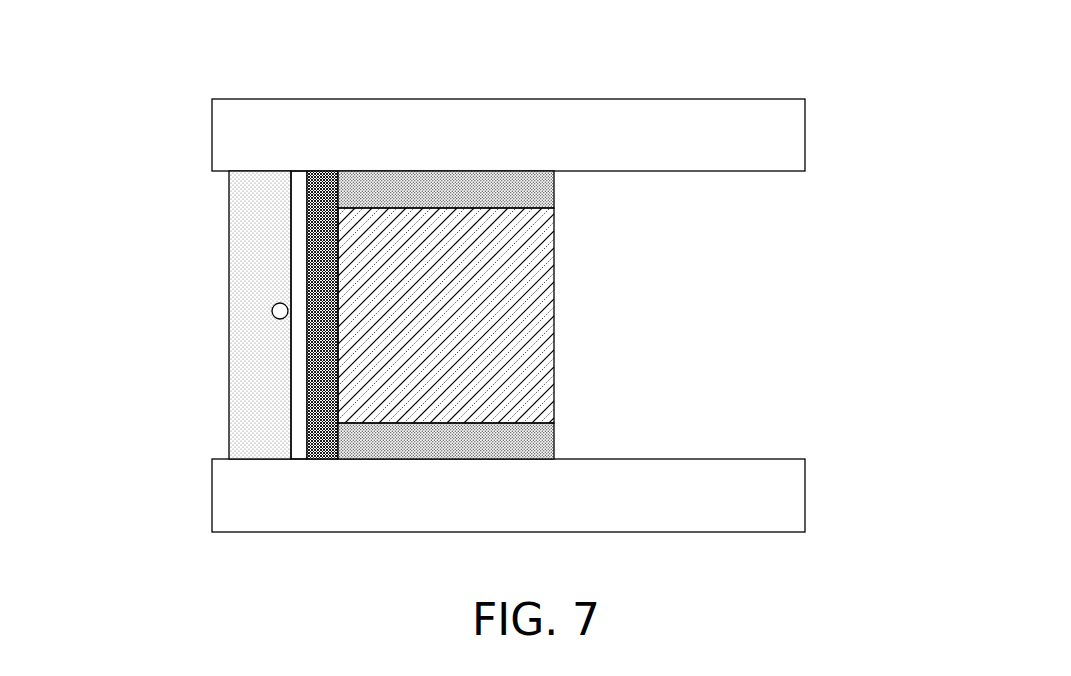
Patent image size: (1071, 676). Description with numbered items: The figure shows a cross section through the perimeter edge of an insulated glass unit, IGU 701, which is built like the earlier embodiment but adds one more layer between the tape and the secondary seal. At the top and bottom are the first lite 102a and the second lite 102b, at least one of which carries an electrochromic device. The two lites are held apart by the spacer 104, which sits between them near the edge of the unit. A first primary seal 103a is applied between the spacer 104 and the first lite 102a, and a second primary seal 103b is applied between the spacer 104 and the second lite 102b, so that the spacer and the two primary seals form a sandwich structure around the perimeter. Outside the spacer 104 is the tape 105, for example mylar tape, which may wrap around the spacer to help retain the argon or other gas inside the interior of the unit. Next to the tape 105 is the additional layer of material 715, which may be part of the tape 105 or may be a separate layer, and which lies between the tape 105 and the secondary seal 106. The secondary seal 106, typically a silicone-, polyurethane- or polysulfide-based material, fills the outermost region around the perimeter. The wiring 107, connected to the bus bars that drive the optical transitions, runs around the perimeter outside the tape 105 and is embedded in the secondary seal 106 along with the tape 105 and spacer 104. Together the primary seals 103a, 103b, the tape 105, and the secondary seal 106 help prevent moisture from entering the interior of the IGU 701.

The IGU 701 is at (122, 153).
The first lite 102a is at (805, 144).
The second lite 102b is at (805, 495).
The first primary seal 103a is at (554, 199).
The second primary seal 103b is at (554, 433).
The spacer 104 is at (554, 315).
The tape 105 is at (317, 398).
The secondary seal 106 is at (248, 207).
The wiring 107 is at (273, 318).
The additional layer of material 715 is at (303, 353).